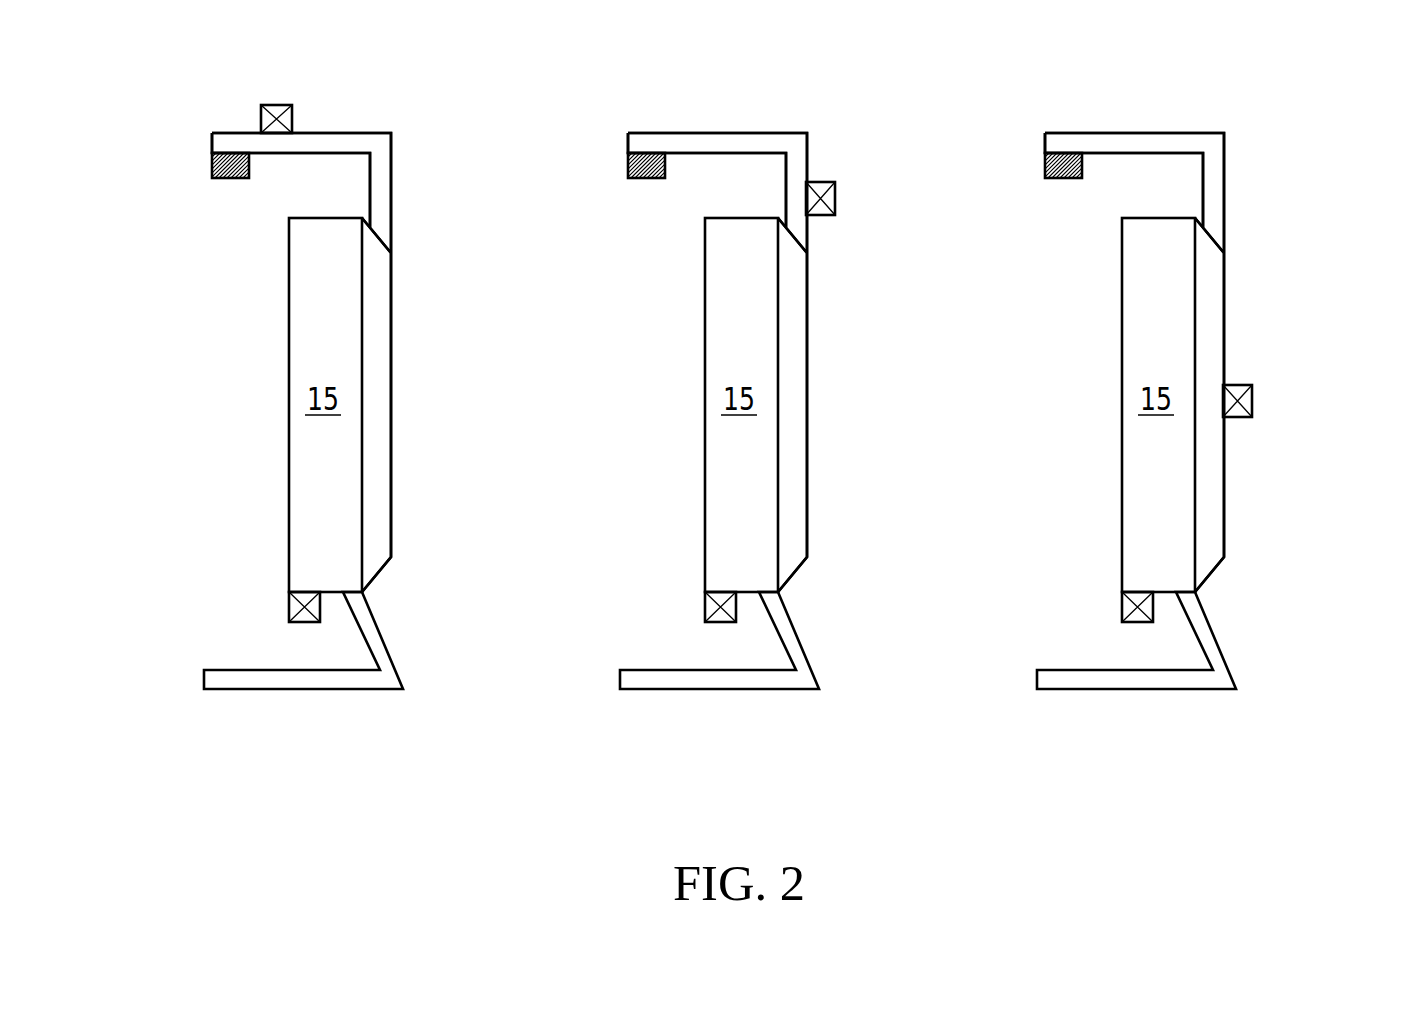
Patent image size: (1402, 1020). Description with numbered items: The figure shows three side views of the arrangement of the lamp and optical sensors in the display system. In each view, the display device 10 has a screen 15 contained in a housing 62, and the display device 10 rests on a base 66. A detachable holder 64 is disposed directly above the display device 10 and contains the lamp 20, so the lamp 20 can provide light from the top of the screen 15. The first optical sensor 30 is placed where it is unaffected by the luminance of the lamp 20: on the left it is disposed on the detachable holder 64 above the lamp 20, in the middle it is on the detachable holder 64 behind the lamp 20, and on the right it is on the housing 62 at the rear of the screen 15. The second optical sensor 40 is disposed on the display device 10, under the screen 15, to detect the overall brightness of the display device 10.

The display device 10 is at (698, 405).
The screen 15 is at (739, 399).
The lamp 20 is at (617, 166).
The first optical sensor 30 is at (260, 118).
The second optical sensor 40 is at (676, 604).
The housing 62 is at (761, 362).
The detachable holder 64 is at (377, 185).
The base 66 is at (720, 677).